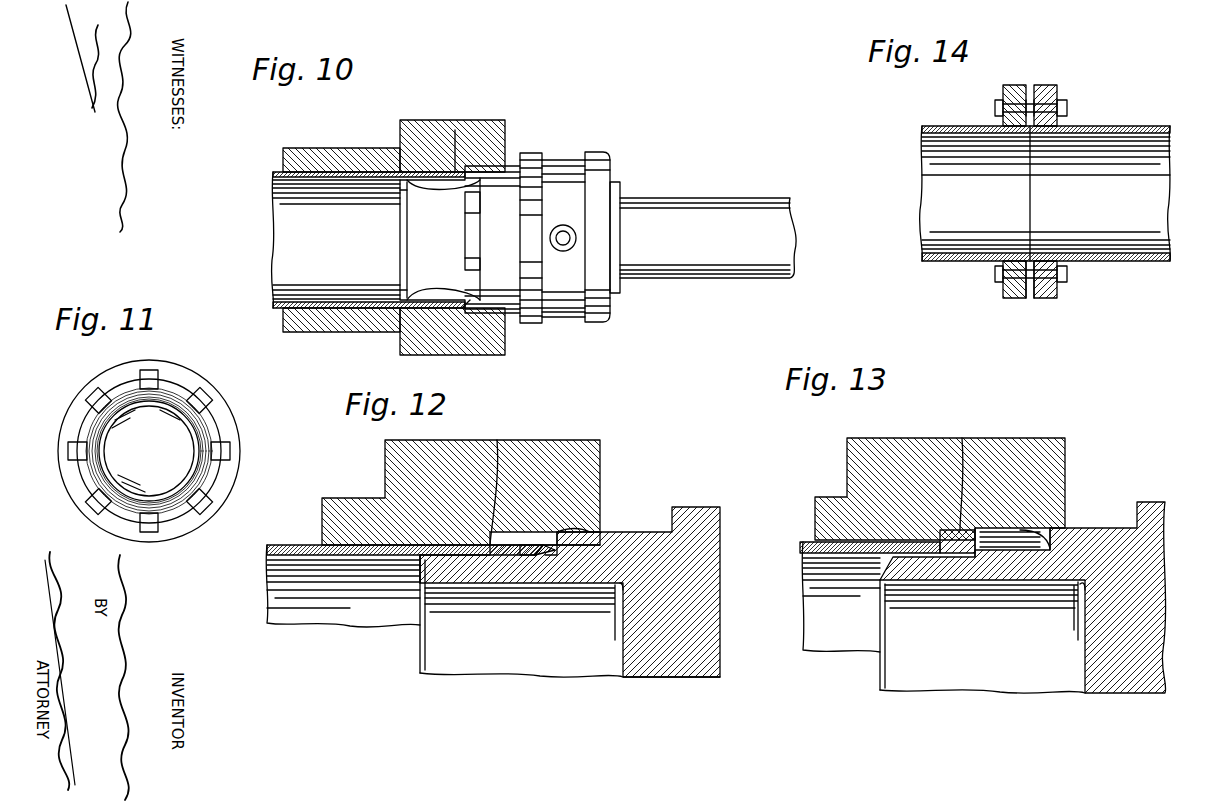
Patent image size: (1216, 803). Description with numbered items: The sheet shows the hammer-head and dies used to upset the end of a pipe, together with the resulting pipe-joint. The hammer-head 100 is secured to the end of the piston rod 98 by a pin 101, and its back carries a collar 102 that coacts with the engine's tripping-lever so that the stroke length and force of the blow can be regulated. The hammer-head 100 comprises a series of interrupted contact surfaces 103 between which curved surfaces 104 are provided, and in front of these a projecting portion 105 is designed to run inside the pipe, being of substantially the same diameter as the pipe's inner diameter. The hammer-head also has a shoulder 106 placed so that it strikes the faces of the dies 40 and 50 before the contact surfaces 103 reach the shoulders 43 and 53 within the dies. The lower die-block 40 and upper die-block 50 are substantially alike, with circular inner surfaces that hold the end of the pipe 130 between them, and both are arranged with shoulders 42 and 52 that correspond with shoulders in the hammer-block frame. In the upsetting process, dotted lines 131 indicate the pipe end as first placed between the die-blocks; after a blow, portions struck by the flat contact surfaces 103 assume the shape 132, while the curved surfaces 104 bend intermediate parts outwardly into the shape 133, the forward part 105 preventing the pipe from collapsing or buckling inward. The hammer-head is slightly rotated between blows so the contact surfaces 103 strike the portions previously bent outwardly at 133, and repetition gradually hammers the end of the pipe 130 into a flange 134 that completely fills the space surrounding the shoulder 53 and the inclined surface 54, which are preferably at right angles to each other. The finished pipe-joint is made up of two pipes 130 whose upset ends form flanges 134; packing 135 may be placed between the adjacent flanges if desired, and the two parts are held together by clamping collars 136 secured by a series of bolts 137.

In FIG. 10, the lower die-block 40 is at (455, 342).
In FIG. 10, the shoulder 42 is at (396, 332).
In FIG. 10, the shoulder 43 is at (468, 315).
In FIG. 10, the upper die-block 50 is at (482, 126).
In FIG. 12, the upper die-block 50 is at (560, 448).
In FIG. 13, the upper die-block 50 is at (1005, 448).
In FIG. 10, the shoulder 52 is at (400, 146).
In FIG. 10, the shoulder 53 is at (455, 130).
In FIG. 12, the shoulder 53 is at (500, 445).
In FIG. 13, the shoulder 53 is at (962, 440).
In FIG. 13, the inclined surface 54 is at (940, 535).
In FIG. 10, the piston rod 98 is at (712, 214).
In FIG. 10, the hammer-head 100 is at (575, 158).
In FIG. 11, the hammer-head 100 is at (149, 444).
In FIG. 12, the hammer-head 100 is at (700, 540).
In FIG. 13, the hammer-head 100 is at (1158, 540).
In FIG. 10, the pin 101 is at (566, 240).
In FIG. 10, the collar 102 is at (613, 170).
In FIG. 10, the interrupted contact surfaces 103 is at (465, 205).
In FIG. 11, the interrupted contact surfaces 103 is at (205, 425).
In FIG. 12, the interrupted contact surfaces 103 is at (588, 522).
In FIG. 10, the curved surfaces 104 is at (470, 240).
In FIG. 11, the curved surfaces 104 is at (115, 390).
In FIG. 12, the curved surfaces 104 is at (598, 538).
In FIG. 10, the projecting portion 105 is at (405, 245).
In FIG. 11, the projecting portion 105 is at (100, 422).
In FIG. 12, the projecting portion 105 is at (420, 583).
In FIG. 10, the shoulder 106 is at (531, 158).
In FIG. 10, the pipe 130 is at (282, 302).
In FIG. 12, the pipe 130 is at (305, 545).
In FIG. 13, the pipe 130 is at (810, 545).
In FIG. 14, the pipe 130 is at (945, 126).
In FIG. 12, the dotted lines 131 is at (548, 552).
In FIG. 12, the struck pipe portions 132 is at (530, 565).
In FIG. 12, the outwardly bent portions 133 is at (540, 555).
In FIG. 13, the flange 134 is at (972, 548).
In FIG. 14, the flange 134 is at (1012, 270).
In FIG. 14, the packing 135 is at (1028, 200).
In FIG. 14, the clamping collars 136 is at (1016, 88).
In FIG. 14, the bolts 137 is at (1000, 104).